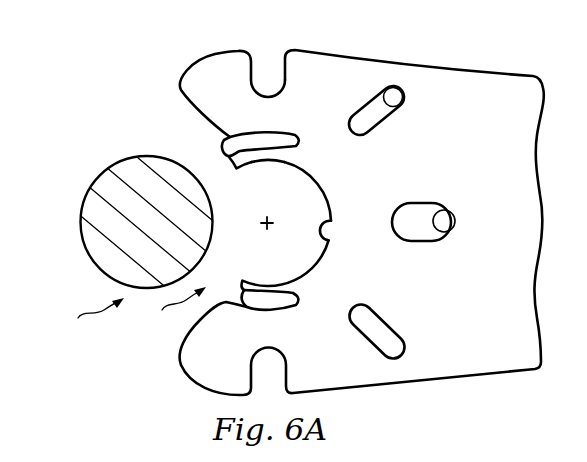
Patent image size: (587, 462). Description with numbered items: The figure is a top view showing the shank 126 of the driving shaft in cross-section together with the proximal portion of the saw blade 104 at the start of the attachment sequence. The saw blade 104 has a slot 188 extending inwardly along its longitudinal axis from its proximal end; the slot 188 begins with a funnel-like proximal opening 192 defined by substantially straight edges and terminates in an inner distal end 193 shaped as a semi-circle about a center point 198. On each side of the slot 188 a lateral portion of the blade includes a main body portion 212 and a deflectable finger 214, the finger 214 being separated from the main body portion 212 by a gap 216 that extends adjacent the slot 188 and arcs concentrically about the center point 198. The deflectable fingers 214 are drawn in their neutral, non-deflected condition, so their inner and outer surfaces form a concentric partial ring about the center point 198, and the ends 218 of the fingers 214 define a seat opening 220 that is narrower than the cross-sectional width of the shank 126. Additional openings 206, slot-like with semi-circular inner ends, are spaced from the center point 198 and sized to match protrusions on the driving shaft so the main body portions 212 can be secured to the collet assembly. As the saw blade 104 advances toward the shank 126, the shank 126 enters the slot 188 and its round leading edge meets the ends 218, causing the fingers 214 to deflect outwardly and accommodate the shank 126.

The saw blade 104 is at (482, 378).
The main body portion 212 is at (213, 76).
The gap 216 is at (290, 134).
The ends of the deflectable fingers 218 is at (230, 136).
The slot 188 is at (262, 163).
The deflectable finger 214 is at (307, 173).
The inner distal end 193 is at (333, 241).
The center point 198 is at (262, 228).
The additional openings 206 is at (402, 100).
The shank 126 is at (83, 204).
The proximal opening 192 is at (91, 325).
The seat opening 220 is at (173, 313).